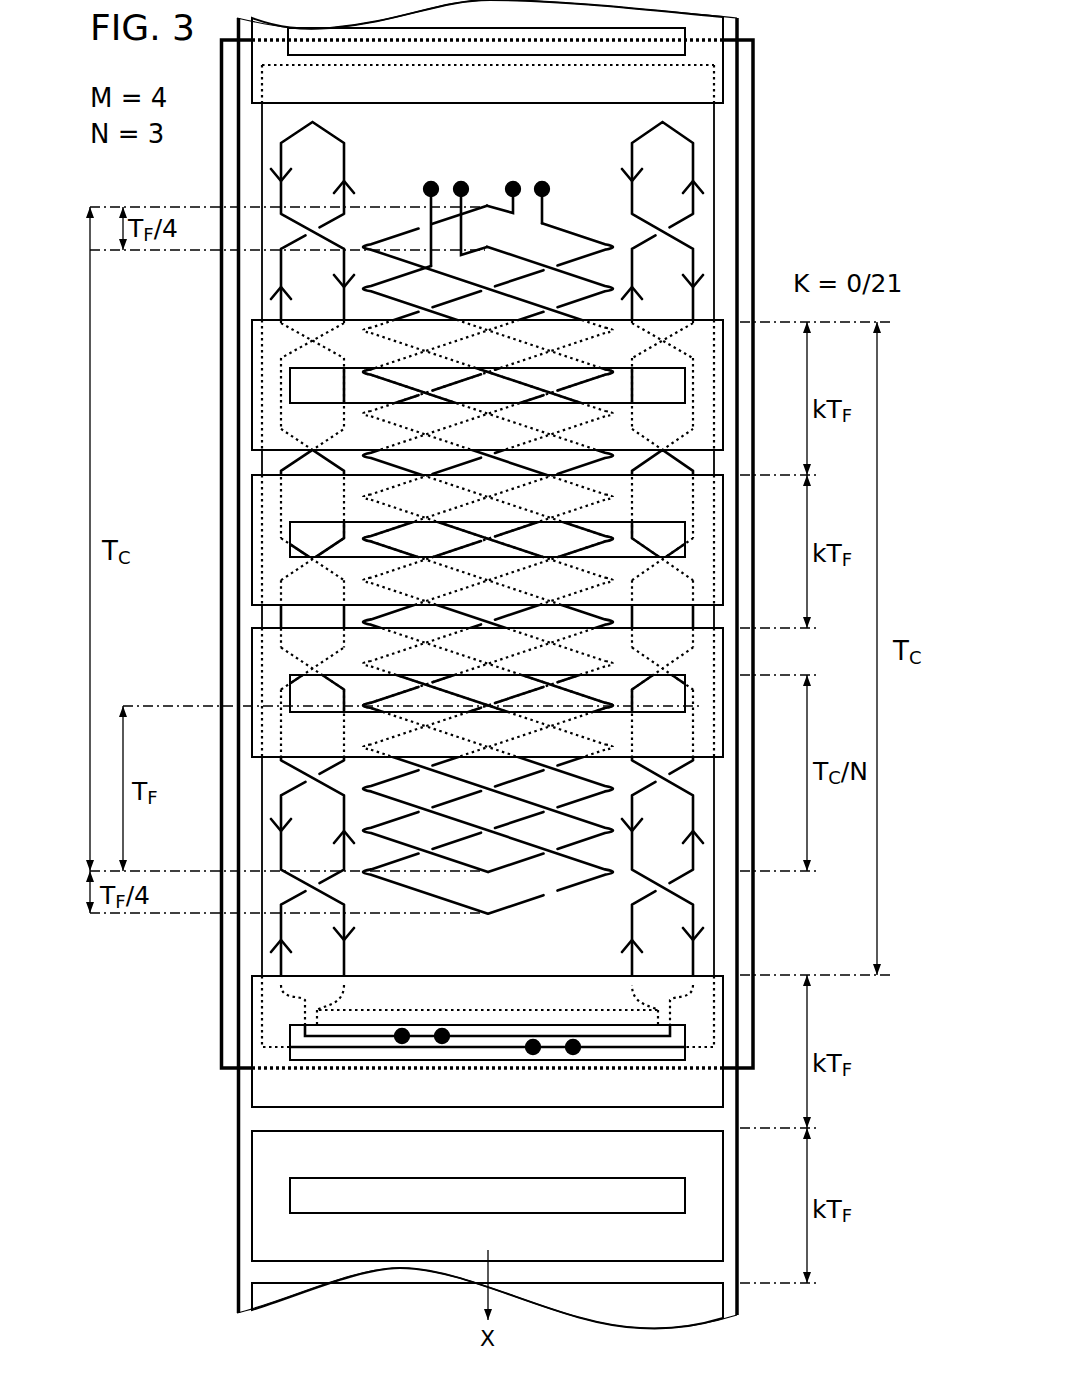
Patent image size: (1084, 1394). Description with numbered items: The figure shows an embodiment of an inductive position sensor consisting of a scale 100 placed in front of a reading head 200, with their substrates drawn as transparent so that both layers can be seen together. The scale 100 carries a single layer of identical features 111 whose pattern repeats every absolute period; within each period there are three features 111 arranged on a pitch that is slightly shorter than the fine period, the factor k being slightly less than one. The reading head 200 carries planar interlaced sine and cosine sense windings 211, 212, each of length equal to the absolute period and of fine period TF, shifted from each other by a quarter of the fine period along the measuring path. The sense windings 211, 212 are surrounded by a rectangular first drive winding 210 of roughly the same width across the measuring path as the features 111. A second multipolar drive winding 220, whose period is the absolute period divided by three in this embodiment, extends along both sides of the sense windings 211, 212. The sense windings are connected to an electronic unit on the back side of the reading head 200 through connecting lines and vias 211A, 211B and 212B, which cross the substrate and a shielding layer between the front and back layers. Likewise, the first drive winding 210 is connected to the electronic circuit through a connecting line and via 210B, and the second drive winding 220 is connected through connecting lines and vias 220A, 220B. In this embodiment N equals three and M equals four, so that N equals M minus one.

The scale 100 is at (277, 1107).
The features 111 is at (703, 103).
The reading head 200 is at (236, 1060).
The first drive winding 210 is at (716, 283).
The connecting line and via 210B is at (573, 1040).
The sine sense winding 211 is at (602, 300).
The connecting line and via 211A is at (430, 182).
The connecting line and via 211B is at (461, 182).
The cosine sense winding 212 is at (592, 235).
The connecting line and via 212B is at (544, 182).
The second multipolar drive winding 220 is at (262, 925).
The connecting line and via 220A is at (402, 1028).
The connecting line and via 220B is at (443, 1028).